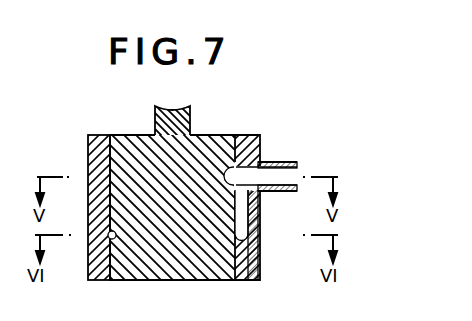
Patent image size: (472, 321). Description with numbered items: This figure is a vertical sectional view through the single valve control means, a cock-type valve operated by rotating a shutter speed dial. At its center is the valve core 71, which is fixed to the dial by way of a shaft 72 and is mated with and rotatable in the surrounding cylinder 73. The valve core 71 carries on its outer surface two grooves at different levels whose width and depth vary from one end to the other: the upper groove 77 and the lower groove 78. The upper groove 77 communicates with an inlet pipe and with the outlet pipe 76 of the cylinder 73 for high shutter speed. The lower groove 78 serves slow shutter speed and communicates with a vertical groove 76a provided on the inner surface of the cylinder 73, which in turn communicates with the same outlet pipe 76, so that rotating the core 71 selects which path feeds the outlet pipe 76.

The valve core 71 is at (127, 133).
The shaft 72 is at (178, 123).
The cylinder 73 is at (96, 157).
The outlet pipe 76 is at (289, 192).
The vertical groove 76a is at (242, 235).
The upper groove 77 is at (227, 174).
The lower groove 78 is at (108, 235).